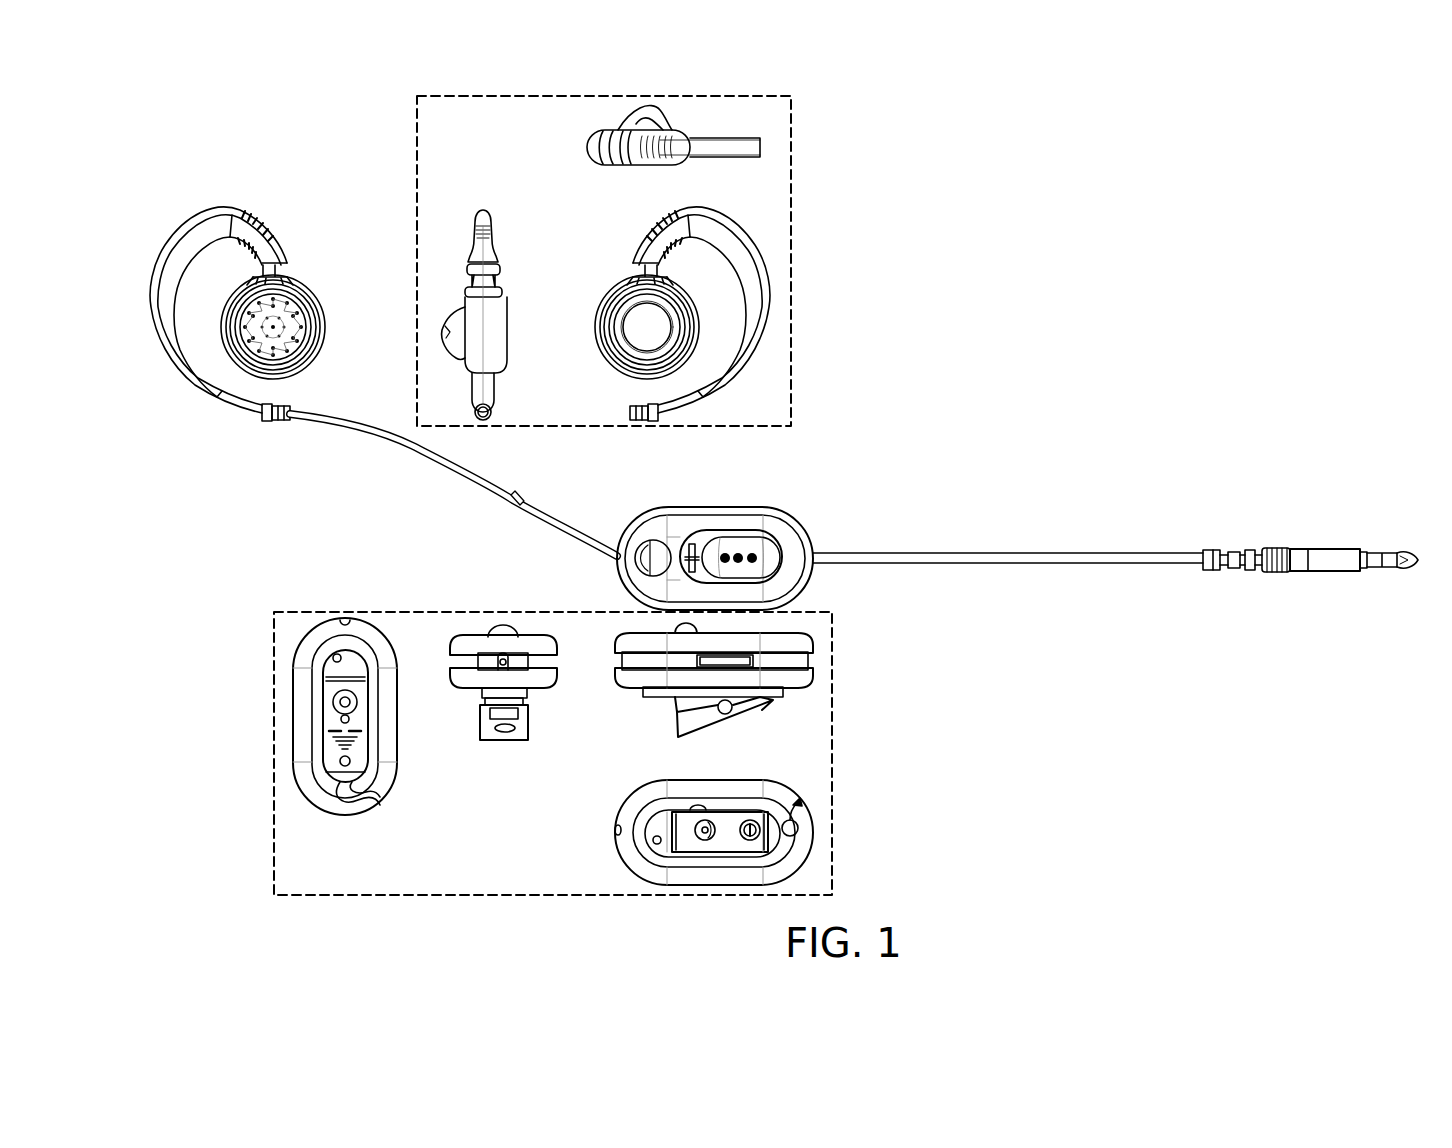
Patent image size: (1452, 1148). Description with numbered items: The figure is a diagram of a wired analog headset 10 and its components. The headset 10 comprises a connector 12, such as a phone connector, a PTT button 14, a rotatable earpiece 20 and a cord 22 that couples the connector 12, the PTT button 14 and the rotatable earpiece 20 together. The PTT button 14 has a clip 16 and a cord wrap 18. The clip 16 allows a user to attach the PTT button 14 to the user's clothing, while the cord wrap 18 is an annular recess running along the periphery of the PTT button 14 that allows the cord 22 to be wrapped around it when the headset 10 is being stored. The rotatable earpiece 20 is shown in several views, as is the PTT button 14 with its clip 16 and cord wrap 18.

The wired analog headset 10 is at (313, 121).
The connector 12 is at (1325, 548).
The PTT button 14 is at (714, 506).
The clip 16 is at (505, 735).
The cord wrap 18 is at (455, 655).
The rotatable earpiece 20 is at (220, 206).
The cord 22 is at (428, 458).